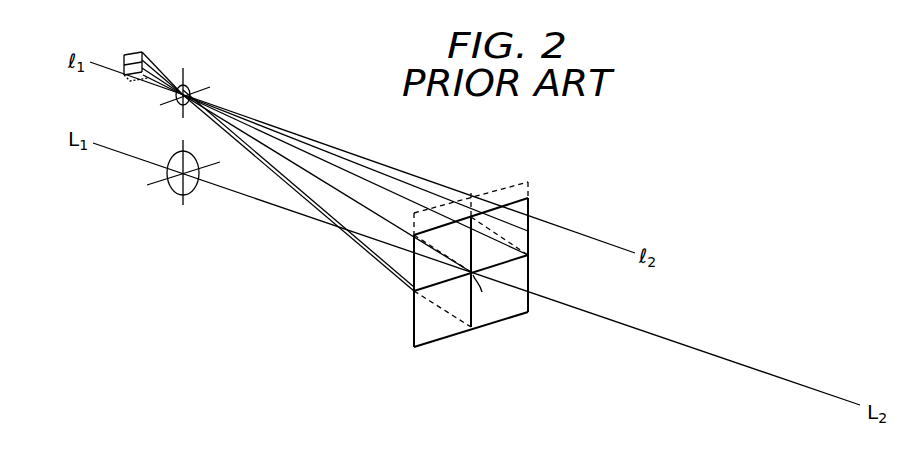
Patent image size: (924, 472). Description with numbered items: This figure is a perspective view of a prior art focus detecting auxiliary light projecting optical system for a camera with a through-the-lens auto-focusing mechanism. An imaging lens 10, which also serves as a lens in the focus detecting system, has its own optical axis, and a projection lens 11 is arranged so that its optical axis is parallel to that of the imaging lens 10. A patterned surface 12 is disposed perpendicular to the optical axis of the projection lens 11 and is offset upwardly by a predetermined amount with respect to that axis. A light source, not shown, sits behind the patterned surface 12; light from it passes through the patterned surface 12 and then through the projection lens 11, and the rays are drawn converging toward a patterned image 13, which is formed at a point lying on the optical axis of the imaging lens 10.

The imaging lens 10 is at (167, 188).
The projection lens 11 is at (191, 86).
The patterned surface 12 is at (138, 53).
The patterned image 13 is at (437, 327).